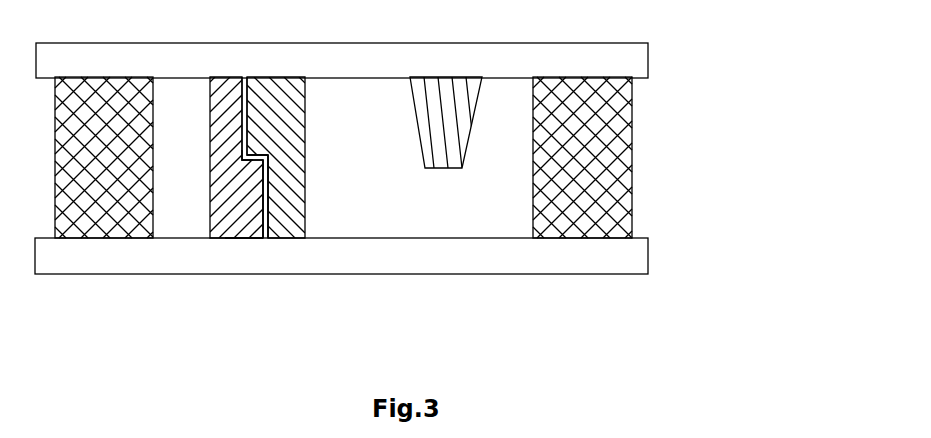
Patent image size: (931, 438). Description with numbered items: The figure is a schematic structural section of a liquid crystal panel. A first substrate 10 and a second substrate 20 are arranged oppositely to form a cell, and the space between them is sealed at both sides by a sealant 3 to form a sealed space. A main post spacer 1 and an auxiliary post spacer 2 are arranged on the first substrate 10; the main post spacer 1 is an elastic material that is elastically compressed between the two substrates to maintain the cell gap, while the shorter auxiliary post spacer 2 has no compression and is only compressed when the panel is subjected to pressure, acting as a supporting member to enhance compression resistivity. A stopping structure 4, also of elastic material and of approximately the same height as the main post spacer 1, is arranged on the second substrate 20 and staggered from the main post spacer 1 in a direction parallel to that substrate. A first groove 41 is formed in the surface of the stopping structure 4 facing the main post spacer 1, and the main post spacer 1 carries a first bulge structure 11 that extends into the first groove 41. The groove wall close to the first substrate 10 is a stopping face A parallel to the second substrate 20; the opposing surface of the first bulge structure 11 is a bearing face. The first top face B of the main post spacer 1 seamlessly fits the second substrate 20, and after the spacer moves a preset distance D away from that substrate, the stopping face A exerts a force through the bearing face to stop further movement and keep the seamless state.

The first substrate 10 is at (603, 59).
The second substrate 20 is at (603, 254).
The sealant 3 is at (600, 161).
The main post spacer 1 is at (207, 142).
The stopping structure 4 is at (317, 186).
The first groove 41 is at (262, 203).
The first bulge structure 11 is at (259, 212).
The auxiliary post spacer 2 is at (437, 107).
The stopping face A is at (247, 162).
The first top face B is at (242, 240).
The preset distance D is at (255, 186).